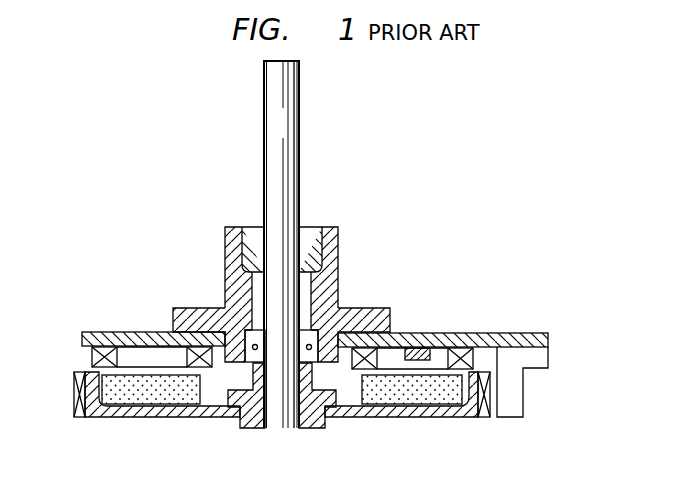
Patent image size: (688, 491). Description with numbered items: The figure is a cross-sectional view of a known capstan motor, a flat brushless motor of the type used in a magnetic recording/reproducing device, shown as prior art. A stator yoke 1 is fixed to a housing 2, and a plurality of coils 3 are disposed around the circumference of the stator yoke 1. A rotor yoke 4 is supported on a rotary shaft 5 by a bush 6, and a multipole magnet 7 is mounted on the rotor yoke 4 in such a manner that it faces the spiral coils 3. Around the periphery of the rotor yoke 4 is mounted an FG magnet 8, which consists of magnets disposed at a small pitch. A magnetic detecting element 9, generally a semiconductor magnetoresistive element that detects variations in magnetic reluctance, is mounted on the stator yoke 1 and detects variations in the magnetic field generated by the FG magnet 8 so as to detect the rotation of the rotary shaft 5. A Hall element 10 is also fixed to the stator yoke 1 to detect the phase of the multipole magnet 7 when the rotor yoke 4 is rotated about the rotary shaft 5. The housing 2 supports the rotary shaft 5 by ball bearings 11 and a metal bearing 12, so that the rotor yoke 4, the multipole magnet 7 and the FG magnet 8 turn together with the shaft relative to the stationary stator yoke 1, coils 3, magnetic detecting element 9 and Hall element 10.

The stator yoke 1 is at (482, 338).
The housing 2 is at (332, 274).
The coils 3 is at (92, 357).
The rotor yoke 4 is at (141, 410).
The rotary shaft 5 is at (300, 132).
The bush 6 is at (330, 428).
The multipole magnet 7 is at (403, 398).
The FG magnet 8 is at (75, 393).
The magnetic detecting element 9 is at (518, 393).
The Hall element 10 is at (420, 347).
The ball bearings 11 is at (250, 320).
The metal bearing 12 is at (255, 227).